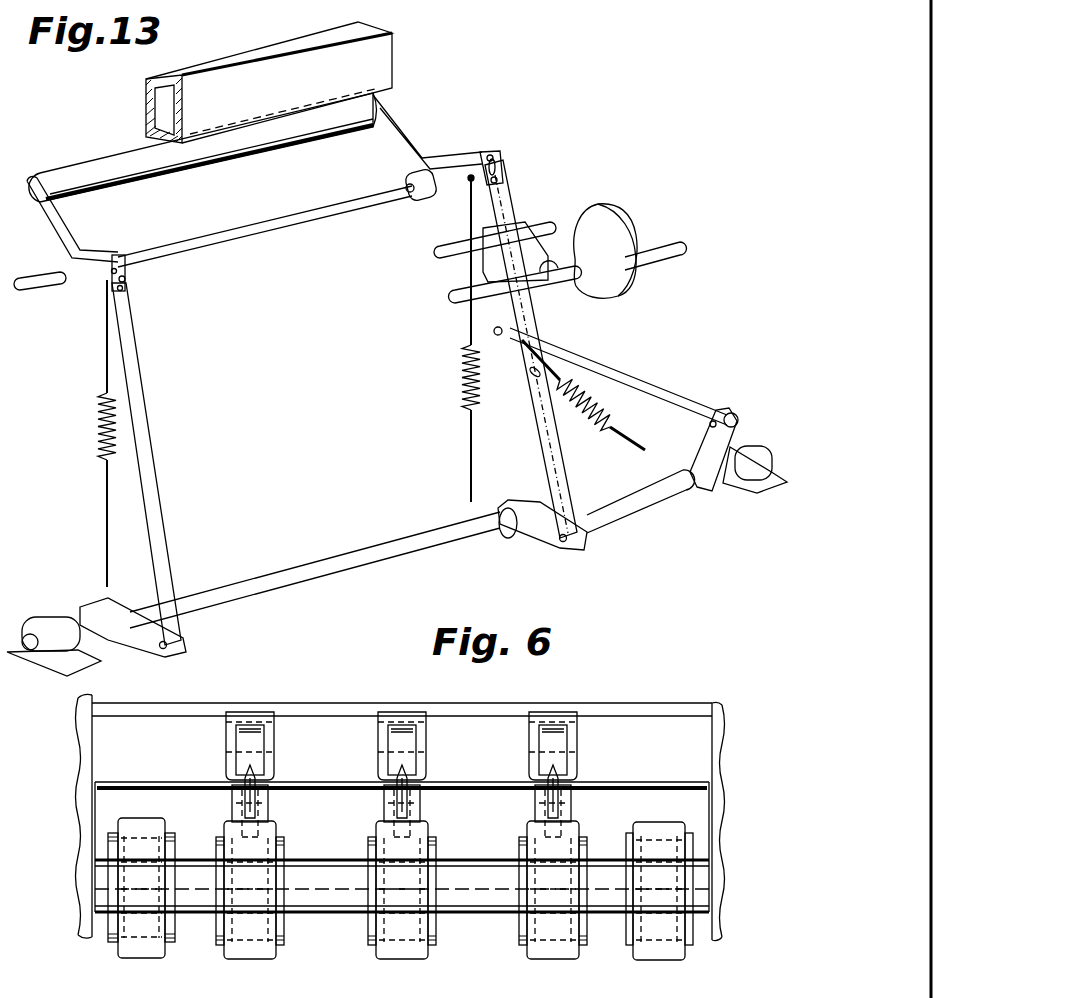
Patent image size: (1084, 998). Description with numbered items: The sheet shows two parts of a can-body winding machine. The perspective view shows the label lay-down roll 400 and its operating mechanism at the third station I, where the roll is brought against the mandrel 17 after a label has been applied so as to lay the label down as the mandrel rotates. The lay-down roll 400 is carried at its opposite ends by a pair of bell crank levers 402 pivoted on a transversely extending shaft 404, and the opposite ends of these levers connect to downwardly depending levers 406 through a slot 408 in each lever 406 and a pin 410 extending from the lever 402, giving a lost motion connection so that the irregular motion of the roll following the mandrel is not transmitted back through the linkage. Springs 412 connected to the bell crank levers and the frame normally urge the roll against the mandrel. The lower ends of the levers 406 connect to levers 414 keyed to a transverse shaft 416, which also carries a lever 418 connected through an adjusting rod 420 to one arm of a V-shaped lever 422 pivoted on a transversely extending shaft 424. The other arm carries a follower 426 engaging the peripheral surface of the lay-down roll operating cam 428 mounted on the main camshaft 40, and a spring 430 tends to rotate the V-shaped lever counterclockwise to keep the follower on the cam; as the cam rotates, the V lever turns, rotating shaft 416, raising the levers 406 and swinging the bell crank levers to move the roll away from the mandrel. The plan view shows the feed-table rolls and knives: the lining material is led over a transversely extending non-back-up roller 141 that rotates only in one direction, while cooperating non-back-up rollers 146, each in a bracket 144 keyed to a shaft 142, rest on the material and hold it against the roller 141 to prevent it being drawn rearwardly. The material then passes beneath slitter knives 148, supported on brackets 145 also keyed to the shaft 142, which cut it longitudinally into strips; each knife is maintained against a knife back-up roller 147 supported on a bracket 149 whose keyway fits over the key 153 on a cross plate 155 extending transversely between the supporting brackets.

In FIG. 13, the third station I is at (210, 62).
In FIG. 13, the mandrel 17 is at (385, 58).
In FIG. 13, the main camshaft 40 is at (660, 243).
In FIG. 13, the lay-down roll 400 is at (362, 116).
In FIG. 13, the bell crank levers 402 is at (62, 234).
In FIG. 13, the transversely extending shaft 404 is at (330, 212).
In FIG. 13, the downwardly depending levers 406 is at (131, 342).
In FIG. 13, the slot 408 is at (125, 252).
In FIG. 13, the pin 410 is at (126, 279).
In FIG. 13, the springs 412 is at (100, 436).
In FIG. 13, the levers 414 is at (148, 652).
In FIG. 13, the transverse shaft 416 is at (447, 551).
In FIG. 13, the lever 418 is at (707, 478).
In FIG. 13, the adjusting rod 420 is at (627, 378).
In FIG. 13, the V-shaped lever 422 is at (485, 266).
In FIG. 13, the transversely extending shaft 424 is at (541, 225).
In FIG. 13, the follower 426 is at (560, 262).
In FIG. 13, the lay-down roll operating cam 428 is at (622, 280).
In FIG. 13, the spring 430 is at (617, 412).
In FIG. 6, the non-back-up roller 141 is at (697, 806).
In FIG. 6, the shaft 142 is at (493, 906).
In FIG. 6, the bracket 144 is at (160, 957).
In FIG. 6, the brackets 145 is at (280, 846).
In FIG. 6, the non-back-up rollers 146 is at (150, 845).
In FIG. 6, the knife back-up rollers 147 is at (238, 740).
In FIG. 6, the slitter knives 148 is at (264, 779).
In FIG. 6, the bracket 149 is at (378, 713).
In FIG. 6, the key 153 is at (196, 710).
In FIG. 6, the cross plate 155 is at (490, 708).